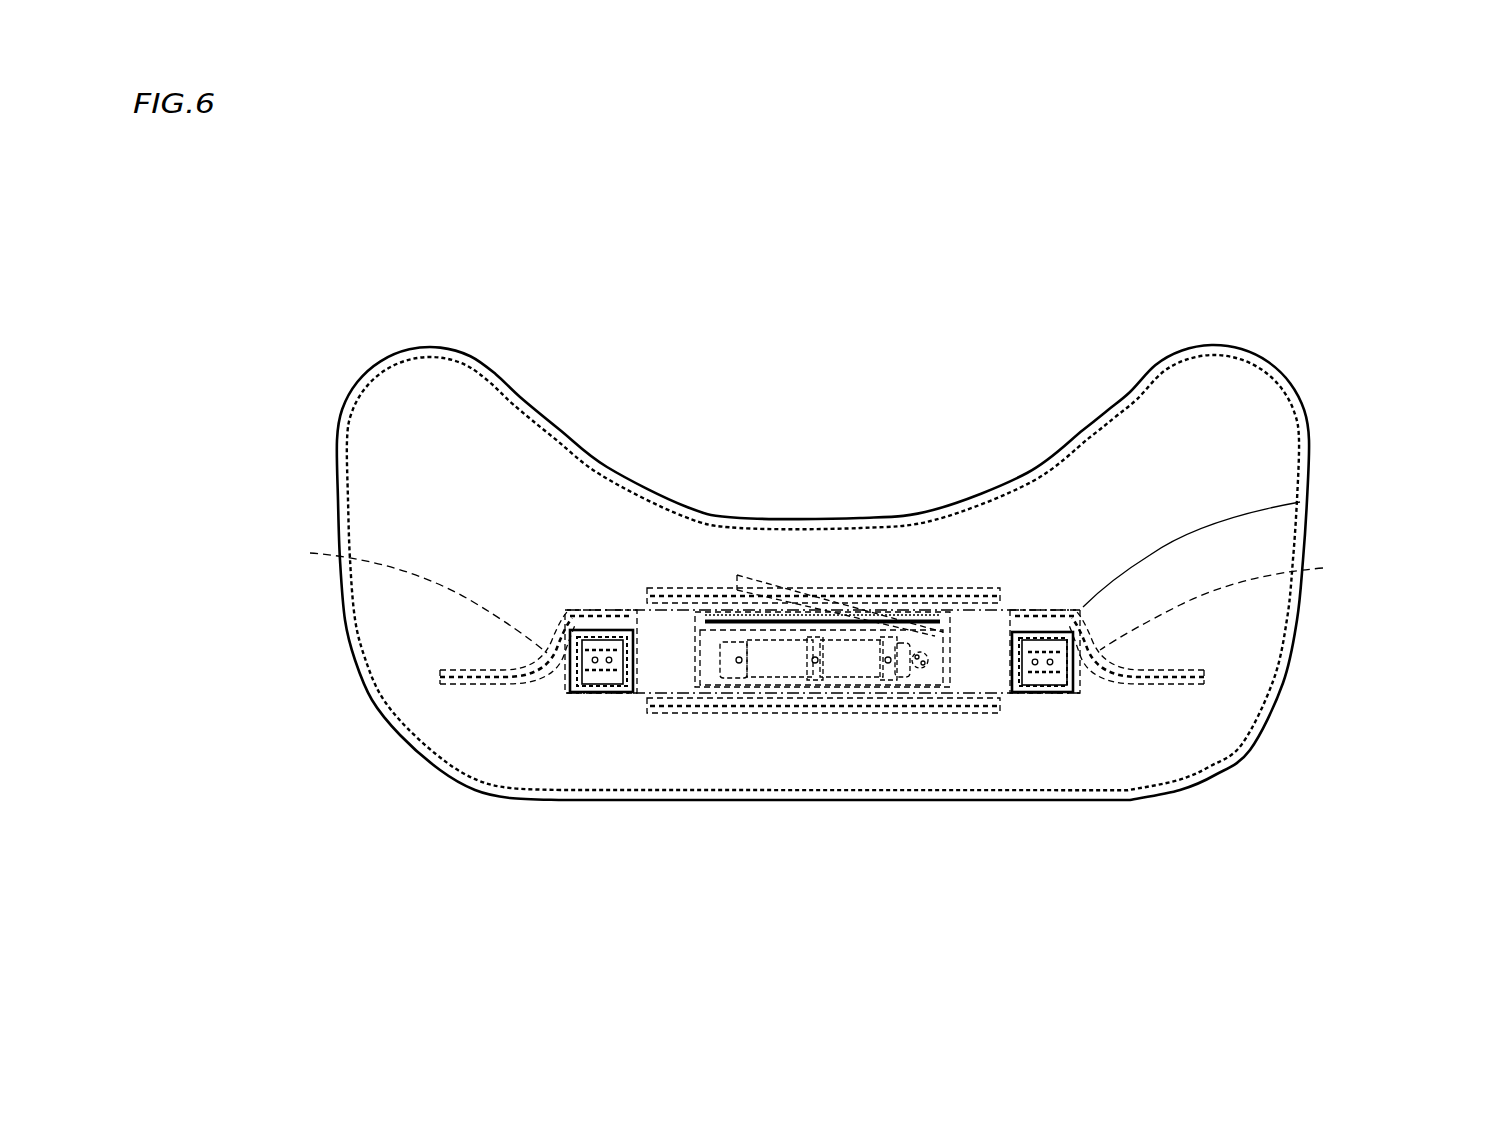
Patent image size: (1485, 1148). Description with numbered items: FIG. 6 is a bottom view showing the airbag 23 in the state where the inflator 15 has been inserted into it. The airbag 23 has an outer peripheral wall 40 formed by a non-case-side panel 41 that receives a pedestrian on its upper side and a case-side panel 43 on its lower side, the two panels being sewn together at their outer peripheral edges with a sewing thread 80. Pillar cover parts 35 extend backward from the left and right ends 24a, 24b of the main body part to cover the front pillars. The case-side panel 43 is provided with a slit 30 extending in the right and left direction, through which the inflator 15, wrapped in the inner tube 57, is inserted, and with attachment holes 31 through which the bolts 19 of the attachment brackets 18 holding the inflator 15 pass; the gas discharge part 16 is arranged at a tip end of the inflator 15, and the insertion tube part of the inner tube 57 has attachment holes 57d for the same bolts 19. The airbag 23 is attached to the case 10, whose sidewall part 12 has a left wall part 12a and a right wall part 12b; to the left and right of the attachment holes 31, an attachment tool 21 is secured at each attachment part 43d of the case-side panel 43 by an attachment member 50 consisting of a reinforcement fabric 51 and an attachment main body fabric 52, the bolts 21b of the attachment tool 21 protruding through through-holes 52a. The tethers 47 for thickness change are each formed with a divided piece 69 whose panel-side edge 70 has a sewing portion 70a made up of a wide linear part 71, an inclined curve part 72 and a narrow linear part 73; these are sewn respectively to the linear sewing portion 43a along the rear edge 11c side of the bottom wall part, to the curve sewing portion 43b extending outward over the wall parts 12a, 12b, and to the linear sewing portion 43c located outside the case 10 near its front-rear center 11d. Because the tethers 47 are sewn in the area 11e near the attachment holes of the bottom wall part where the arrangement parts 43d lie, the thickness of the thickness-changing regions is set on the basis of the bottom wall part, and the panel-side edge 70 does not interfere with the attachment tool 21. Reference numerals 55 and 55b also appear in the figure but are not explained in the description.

The airbag 23 is at (333, 298).
The outer peripheral wall 40 is at (433, 287).
The non-case-side panel 41 is at (413, 383).
The case-side panel 43 is at (445, 385).
The pillar cover part 35 is at (362, 460).
The sewing thread 80 is at (1251, 359).
The area in the vicinity of the attachment holes 11e is at (558, 588).
The wide linear part 71 is at (822, 533).
The sewing portion 70a is at (822, 533).
The sewing portion 43a is at (565, 612).
The attachment part 43d is at (598, 625).
The rear edge 11c is at (667, 620).
The inner tube 57 is at (740, 578).
The slit 30 is at (853, 627).
The slide member 55 is at (950, 660).
The center of the case 11d is at (982, 660).
The curve sewing portion 43b is at (817, 580).
The inclined curve part 72 is at (817, 580).
The left end 24a is at (345, 705).
The right end 24b is at (1298, 707).
The sewing portion 43c is at (821, 743).
The narrow linear part 73 is at (447, 683).
The tether for thickness change 47 is at (832, 771).
The divided piece 69 is at (832, 771).
The panel-side edge 70 is at (477, 683).
The left wall part 12a is at (567, 697).
The right wall part 12b is at (1080, 673).
The case 10 is at (778, 769).
The sidewall part 12 is at (595, 670).
The attachment tool 21 is at (595, 693).
The through-hole 52a is at (812, 770).
The bolt 21b is at (609, 660).
The inflator 15 is at (757, 670).
The attachment bracket 18 is at (817, 677).
The gas discharge part 16 is at (920, 680).
The bolt 19 is at (861, 776).
The attachment hole 31 is at (861, 776).
The slide member shaft 55b is at (861, 776).
The attachment hole 57d is at (888, 660).
The attachment main body fabric 52 is at (1050, 670).
The reinforcement fabric 51 is at (1070, 693).
The attachment member 50 is at (1080, 792).